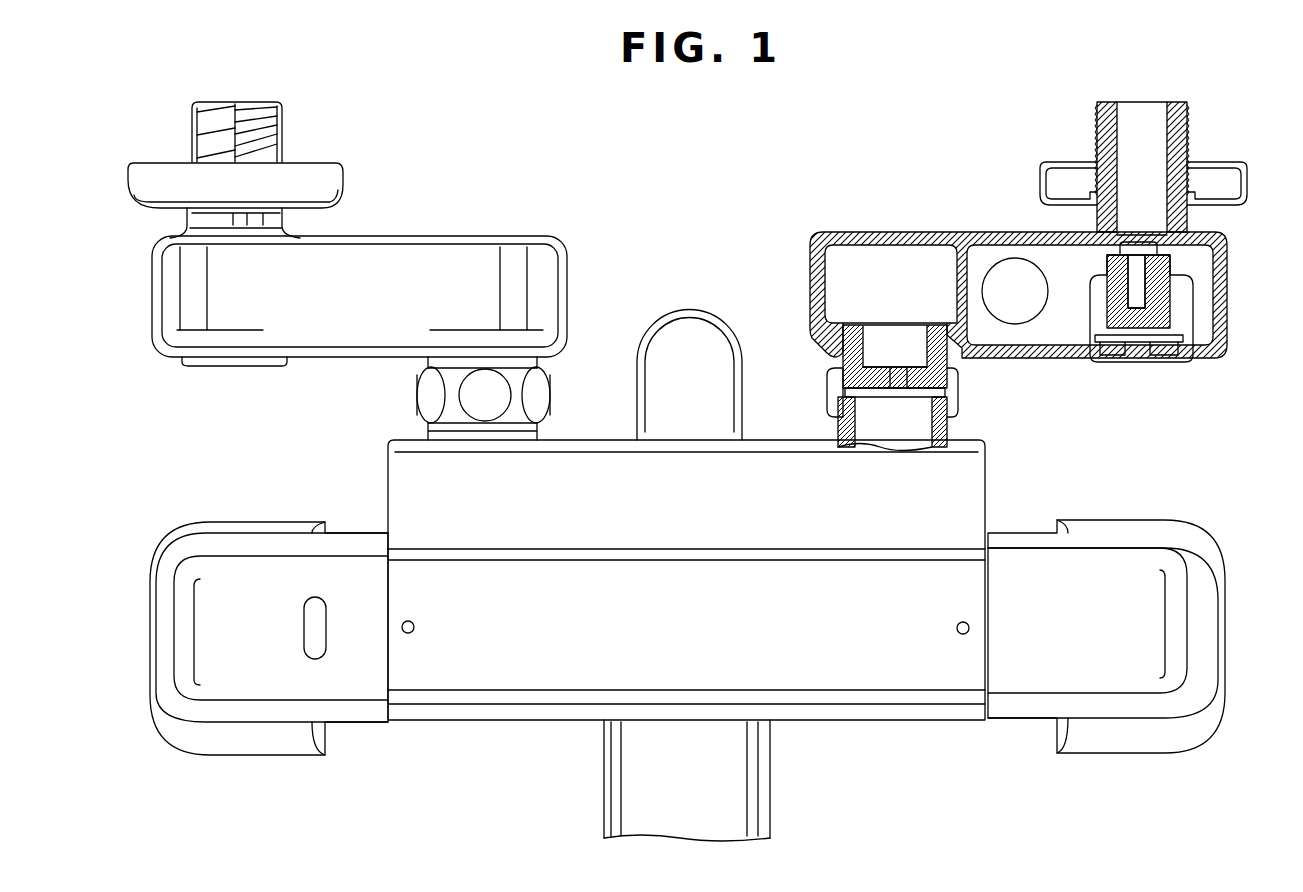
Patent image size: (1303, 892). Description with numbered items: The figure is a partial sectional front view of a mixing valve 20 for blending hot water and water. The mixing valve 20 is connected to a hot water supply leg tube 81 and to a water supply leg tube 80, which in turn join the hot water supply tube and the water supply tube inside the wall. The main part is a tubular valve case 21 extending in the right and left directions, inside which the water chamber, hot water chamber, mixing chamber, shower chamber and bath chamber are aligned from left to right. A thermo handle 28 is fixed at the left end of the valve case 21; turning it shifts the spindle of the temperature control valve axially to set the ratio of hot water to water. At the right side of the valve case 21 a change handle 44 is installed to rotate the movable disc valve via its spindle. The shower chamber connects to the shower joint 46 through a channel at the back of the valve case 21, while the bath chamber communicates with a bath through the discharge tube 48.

The mixing valve 20 is at (1017, 488).
The tubular valve case 21 is at (485, 704).
The thermo handle 28 is at (239, 702).
The change handle 44 is at (1115, 695).
The shower joint 46 is at (678, 328).
The discharge tube 48 is at (619, 806).
The water supply leg tube 80 is at (330, 357).
The hot water supply leg tube 81 is at (1053, 357).